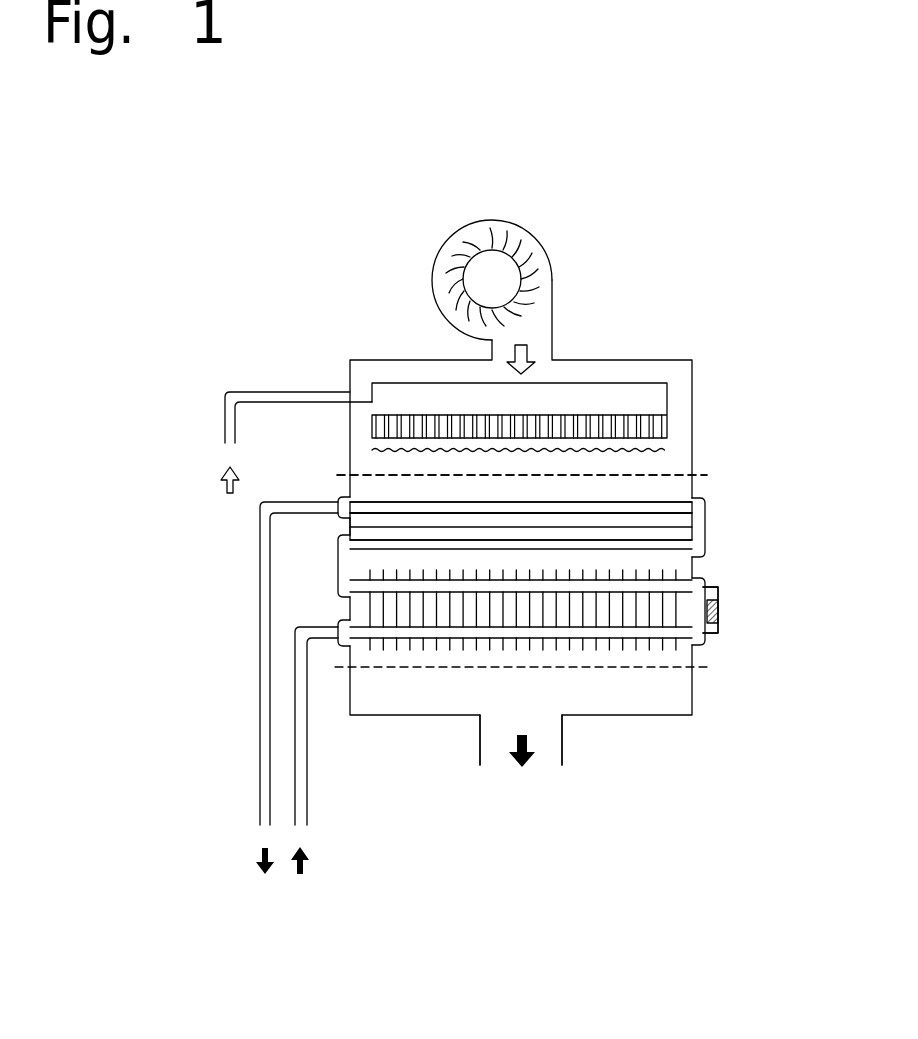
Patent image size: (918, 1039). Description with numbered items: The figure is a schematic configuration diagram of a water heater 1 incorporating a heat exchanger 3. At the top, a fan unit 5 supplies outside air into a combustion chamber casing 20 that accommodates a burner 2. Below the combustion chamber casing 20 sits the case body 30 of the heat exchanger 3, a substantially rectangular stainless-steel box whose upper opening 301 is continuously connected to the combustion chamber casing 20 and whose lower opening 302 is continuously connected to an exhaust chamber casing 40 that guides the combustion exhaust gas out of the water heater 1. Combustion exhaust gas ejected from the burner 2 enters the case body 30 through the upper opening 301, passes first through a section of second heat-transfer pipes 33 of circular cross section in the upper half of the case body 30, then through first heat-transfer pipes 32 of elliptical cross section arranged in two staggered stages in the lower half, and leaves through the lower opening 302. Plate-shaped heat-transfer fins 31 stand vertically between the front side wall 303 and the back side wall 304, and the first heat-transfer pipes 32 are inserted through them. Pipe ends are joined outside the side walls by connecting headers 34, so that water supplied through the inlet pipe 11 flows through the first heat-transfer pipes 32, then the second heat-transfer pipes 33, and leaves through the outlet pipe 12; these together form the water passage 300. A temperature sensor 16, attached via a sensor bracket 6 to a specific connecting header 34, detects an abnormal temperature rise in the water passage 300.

The water heater 1 is at (312, 331).
The burner 2 is at (674, 407).
The heat exchanger 3 is at (499, 610).
The fan unit 5 is at (543, 250).
The sensor bracket 6 is at (721, 632).
The inlet pipe 11 is at (295, 760).
The outlet pipe 12 is at (260, 693).
The temperature sensor 16 is at (718, 610).
The combustion chamber casing 20 is at (693, 375).
The case body 30 is at (693, 655).
The heat-transfer fins 31 is at (553, 641).
The first heat-transfer pipes 32 is at (630, 641).
The second heat-transfer pipes 33 is at (660, 498).
The connecting header 34 is at (703, 590).
The exhaust chamber casing 40 is at (693, 703).
The water passage 300 is at (577, 494).
The upper opening 301 is at (365, 475).
The lower opening 302 is at (433, 668).
The front side wall 303 is at (693, 492).
The back side wall 304 is at (340, 527).